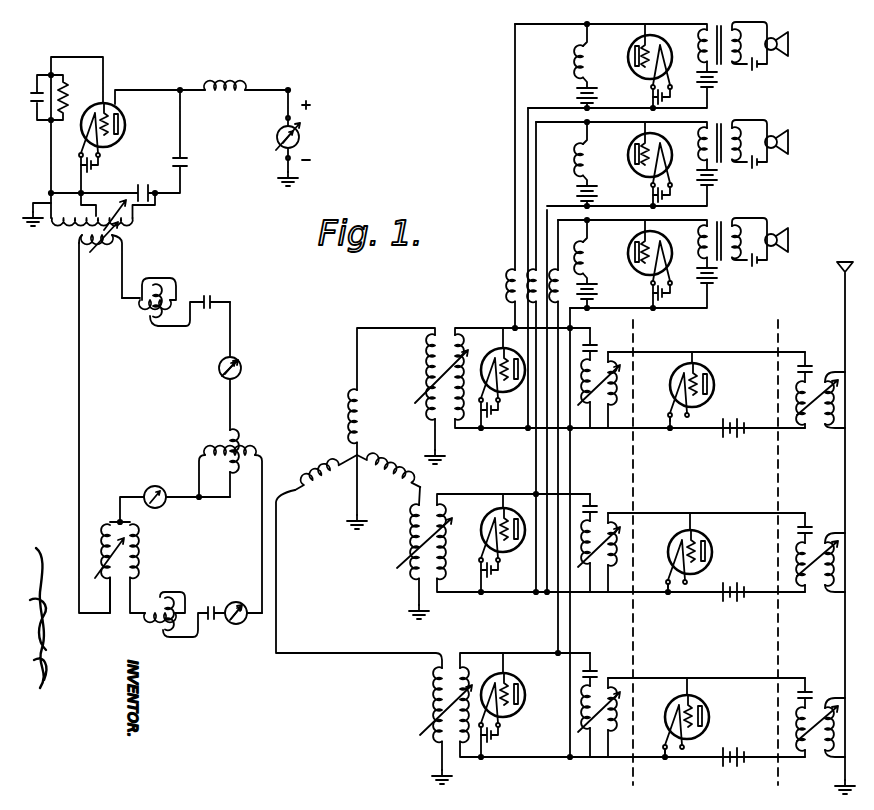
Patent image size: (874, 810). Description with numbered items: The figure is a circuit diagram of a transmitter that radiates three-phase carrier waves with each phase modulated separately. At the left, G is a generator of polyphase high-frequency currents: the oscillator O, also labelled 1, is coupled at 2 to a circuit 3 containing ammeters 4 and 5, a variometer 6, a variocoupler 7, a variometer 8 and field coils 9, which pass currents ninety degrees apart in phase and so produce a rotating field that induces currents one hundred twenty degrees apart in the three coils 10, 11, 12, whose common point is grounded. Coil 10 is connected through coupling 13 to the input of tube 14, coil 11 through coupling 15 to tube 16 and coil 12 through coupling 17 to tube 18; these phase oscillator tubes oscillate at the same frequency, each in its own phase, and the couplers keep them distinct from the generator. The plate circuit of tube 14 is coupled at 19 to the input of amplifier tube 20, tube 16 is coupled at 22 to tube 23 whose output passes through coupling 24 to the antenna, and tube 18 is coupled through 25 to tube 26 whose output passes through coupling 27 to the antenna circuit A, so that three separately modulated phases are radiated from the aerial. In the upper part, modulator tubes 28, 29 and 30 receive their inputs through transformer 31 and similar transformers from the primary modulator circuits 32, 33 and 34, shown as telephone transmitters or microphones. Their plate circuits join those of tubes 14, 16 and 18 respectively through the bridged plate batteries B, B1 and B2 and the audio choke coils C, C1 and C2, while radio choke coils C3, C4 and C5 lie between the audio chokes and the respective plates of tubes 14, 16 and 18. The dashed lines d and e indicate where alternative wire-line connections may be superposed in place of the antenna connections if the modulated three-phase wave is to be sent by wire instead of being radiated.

The oscillator 1 is at (121, 121).
The oscillator O is at (153, 148).
The coupling 2 is at (89, 245).
The circuit 3 is at (80, 398).
The ammeter 4 is at (243, 367).
The ammeter 5 is at (158, 489).
The variometer 6 is at (176, 296).
The variocoupler 7 is at (147, 544).
The variometer 8 is at (199, 619).
The field coils 9 is at (230, 520).
The coil 10 is at (362, 402).
The coil 11 is at (391, 473).
The coil 12 is at (359, 557).
The generator of polyphase high frequency currents G is at (298, 421).
The coupling 13 is at (502, 383).
The tube 14 is at (494, 352).
The coupling 15 is at (493, 543).
The tube 16 is at (486, 517).
The coupling 17 is at (505, 708).
The tube 18 is at (488, 668).
The coupling 19 is at (599, 376).
The tube 20 is at (697, 394).
The coupling 22 is at (604, 509).
The tube 23 is at (697, 557).
The coupling 24 is at (819, 524).
The coupling 25 is at (603, 673).
The tube 26 is at (673, 693).
The coupling 27 is at (823, 364).
The modulator tube 28 is at (611, 66).
The modulator tube 29 is at (621, 164).
The modulator tube 30 is at (632, 264).
The transformer 31 is at (732, 43).
The primary modulator circuit 32 is at (764, 43).
The primary modulator circuit 33 is at (742, 152).
The primary modulator circuit 34 is at (743, 228).
The audio choke coil C is at (588, 56).
The plate battery B is at (598, 95).
The audio choke coil C1 is at (590, 154).
The plate battery B1 is at (600, 193).
The audio choke coil C2 is at (592, 252).
The plate battery B2 is at (601, 294).
The radio choke coil C3 is at (511, 291).
The radio choke coil C4 is at (534, 272).
The radio choke coil C5 is at (556, 268).
The reference line d is at (636, 559).
The dotted line e is at (784, 558).
The antenna circuit A is at (851, 528).